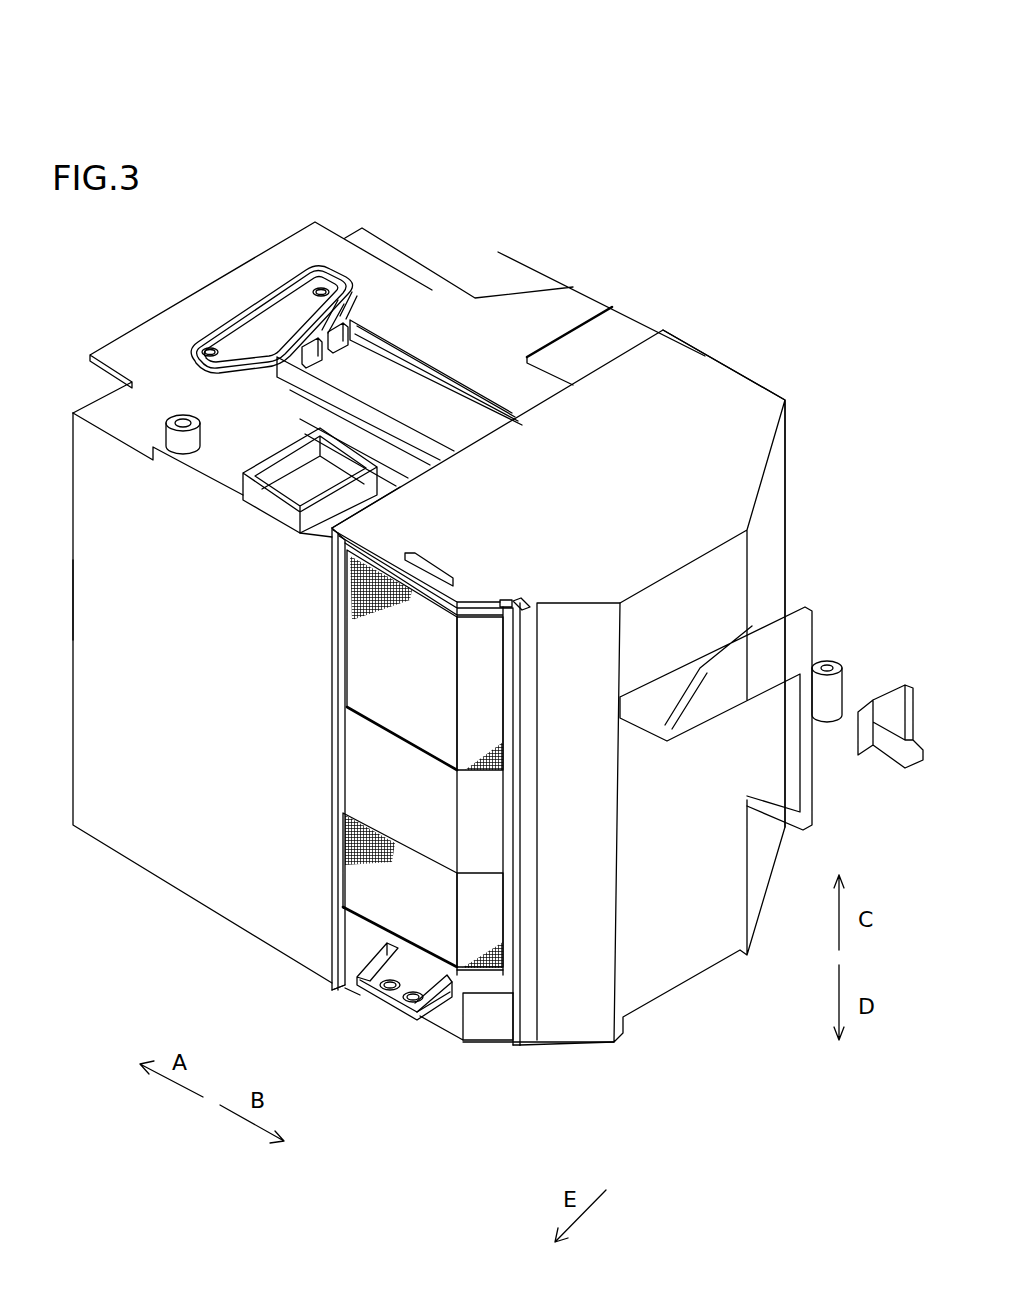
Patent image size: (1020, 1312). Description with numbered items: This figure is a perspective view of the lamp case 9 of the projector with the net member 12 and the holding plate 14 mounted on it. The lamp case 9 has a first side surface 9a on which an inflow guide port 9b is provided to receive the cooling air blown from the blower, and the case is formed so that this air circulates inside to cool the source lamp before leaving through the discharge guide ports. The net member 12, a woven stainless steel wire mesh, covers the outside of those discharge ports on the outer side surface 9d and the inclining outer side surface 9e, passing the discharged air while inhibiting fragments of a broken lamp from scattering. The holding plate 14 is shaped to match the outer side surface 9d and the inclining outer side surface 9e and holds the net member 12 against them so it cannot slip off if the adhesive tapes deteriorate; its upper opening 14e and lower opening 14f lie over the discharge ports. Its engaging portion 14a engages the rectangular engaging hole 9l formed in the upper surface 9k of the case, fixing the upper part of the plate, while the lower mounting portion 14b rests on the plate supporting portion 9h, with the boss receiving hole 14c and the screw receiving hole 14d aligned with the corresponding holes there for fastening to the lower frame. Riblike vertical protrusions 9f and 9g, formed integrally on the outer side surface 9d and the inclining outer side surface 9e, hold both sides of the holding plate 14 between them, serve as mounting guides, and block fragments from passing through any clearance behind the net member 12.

The lamp case 9 is at (620, 133).
The first side surface 9a is at (163, 778).
The inflow guide port 9b is at (78, 592).
The outer side surface 9d is at (380, 553).
The inclining outer side surface 9e is at (520, 608).
The protrusion 9f is at (332, 990).
The protrusion 9g is at (517, 1030).
The plate supporting portion 9h is at (410, 1020).
The upper surface 9k is at (707, 388).
The engaging hole 9l is at (492, 612).
The net member 12 is at (483, 973).
The holding plate 14 is at (470, 613).
The engaging portion 14a is at (408, 560).
The lower mounting portion 14b is at (390, 995).
The boss receiving hole 14c is at (360, 1013).
The screw receiving hole 14d is at (404, 1007).
The upper opening 14e is at (367, 713).
The lower opening 14f is at (370, 920).